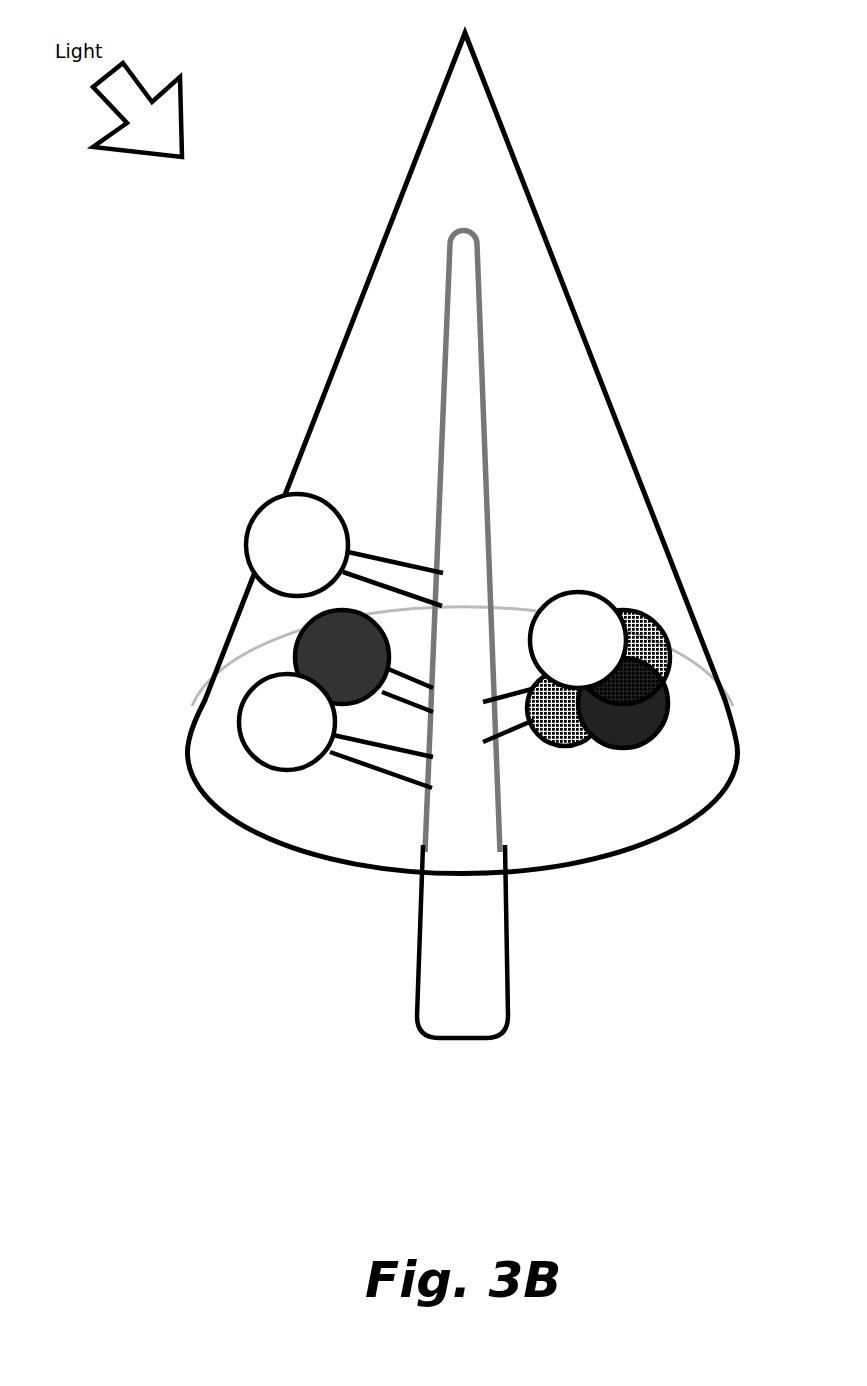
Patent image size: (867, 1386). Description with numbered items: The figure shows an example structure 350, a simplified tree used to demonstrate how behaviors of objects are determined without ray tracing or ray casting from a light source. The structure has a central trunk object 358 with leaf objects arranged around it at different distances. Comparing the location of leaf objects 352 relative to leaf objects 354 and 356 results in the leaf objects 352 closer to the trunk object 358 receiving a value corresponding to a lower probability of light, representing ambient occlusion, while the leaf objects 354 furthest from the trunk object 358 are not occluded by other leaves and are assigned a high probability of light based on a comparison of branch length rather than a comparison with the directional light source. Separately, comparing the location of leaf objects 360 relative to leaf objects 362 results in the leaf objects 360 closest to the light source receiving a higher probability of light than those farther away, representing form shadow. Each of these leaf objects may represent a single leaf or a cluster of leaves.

The example structure 350 is at (381, 49).
The leaf objects 352 is at (364, 661).
The leaf objects 354 is at (344, 550).
The leaf objects 356 is at (336, 731).
The trunk object 358 is at (462, 941).
The leaf objects 360 is at (578, 640).
The leaf objects 362 is at (623, 703).